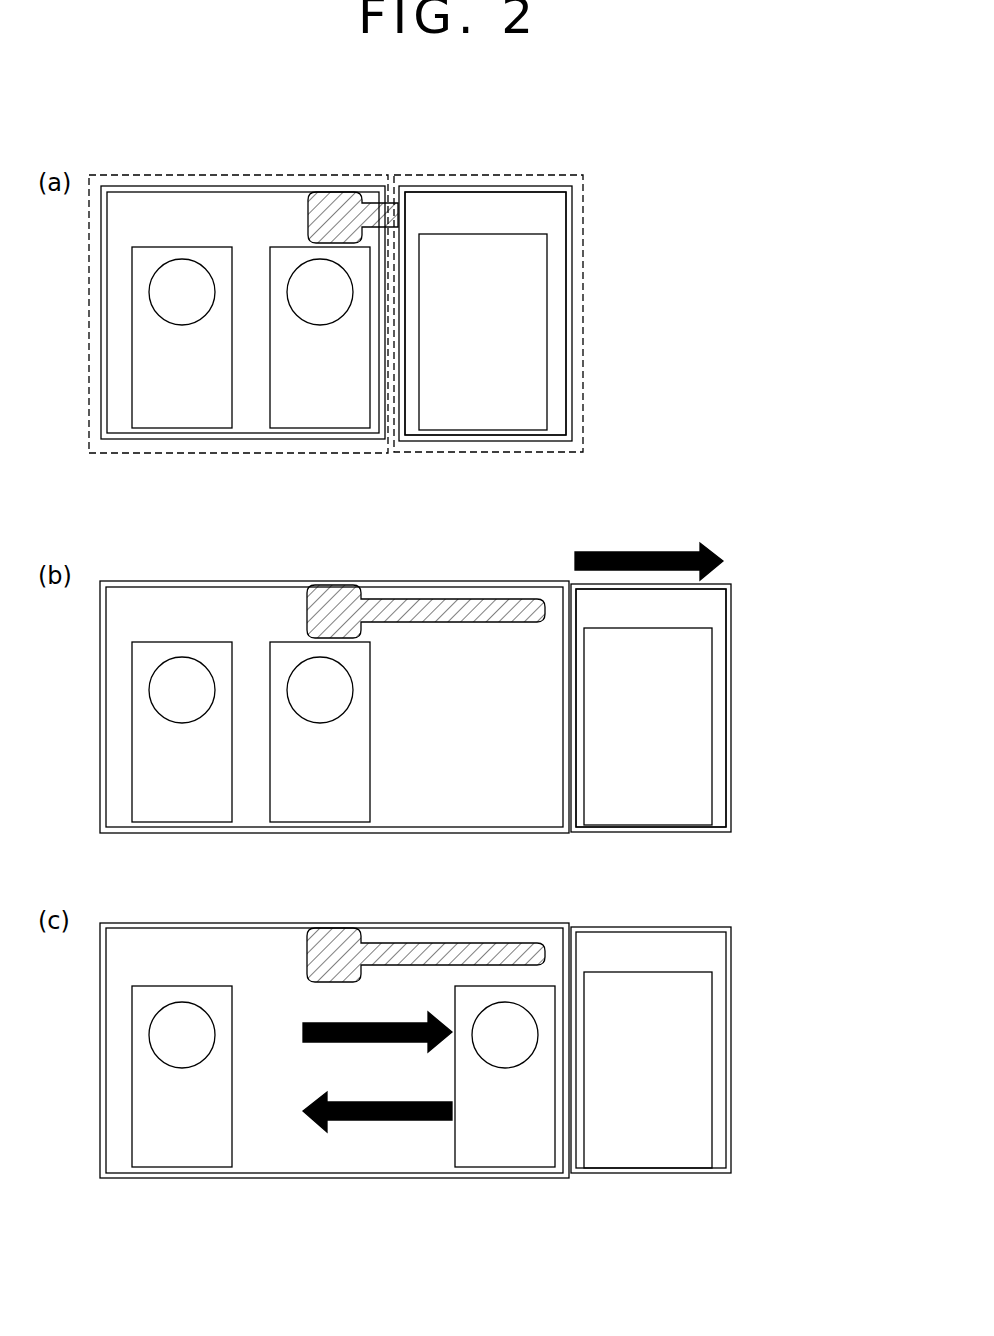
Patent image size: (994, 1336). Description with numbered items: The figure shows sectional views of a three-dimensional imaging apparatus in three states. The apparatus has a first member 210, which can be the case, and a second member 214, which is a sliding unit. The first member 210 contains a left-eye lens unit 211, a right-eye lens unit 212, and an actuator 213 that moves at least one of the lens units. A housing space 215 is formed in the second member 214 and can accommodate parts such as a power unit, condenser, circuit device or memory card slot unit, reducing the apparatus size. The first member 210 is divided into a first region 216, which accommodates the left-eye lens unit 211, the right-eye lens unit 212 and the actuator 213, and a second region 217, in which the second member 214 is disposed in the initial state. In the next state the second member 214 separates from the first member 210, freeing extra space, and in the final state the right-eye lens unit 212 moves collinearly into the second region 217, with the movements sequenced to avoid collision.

The first member 210 is at (435, 187).
The left-eye lens unit 211 is at (180, 408).
The right-eye lens unit 212 is at (320, 408).
The actuator 213 is at (332, 200).
The second member 214 is at (532, 218).
The housing space 215 is at (517, 332).
The first region 216 is at (250, 455).
The second region 217 is at (488, 455).